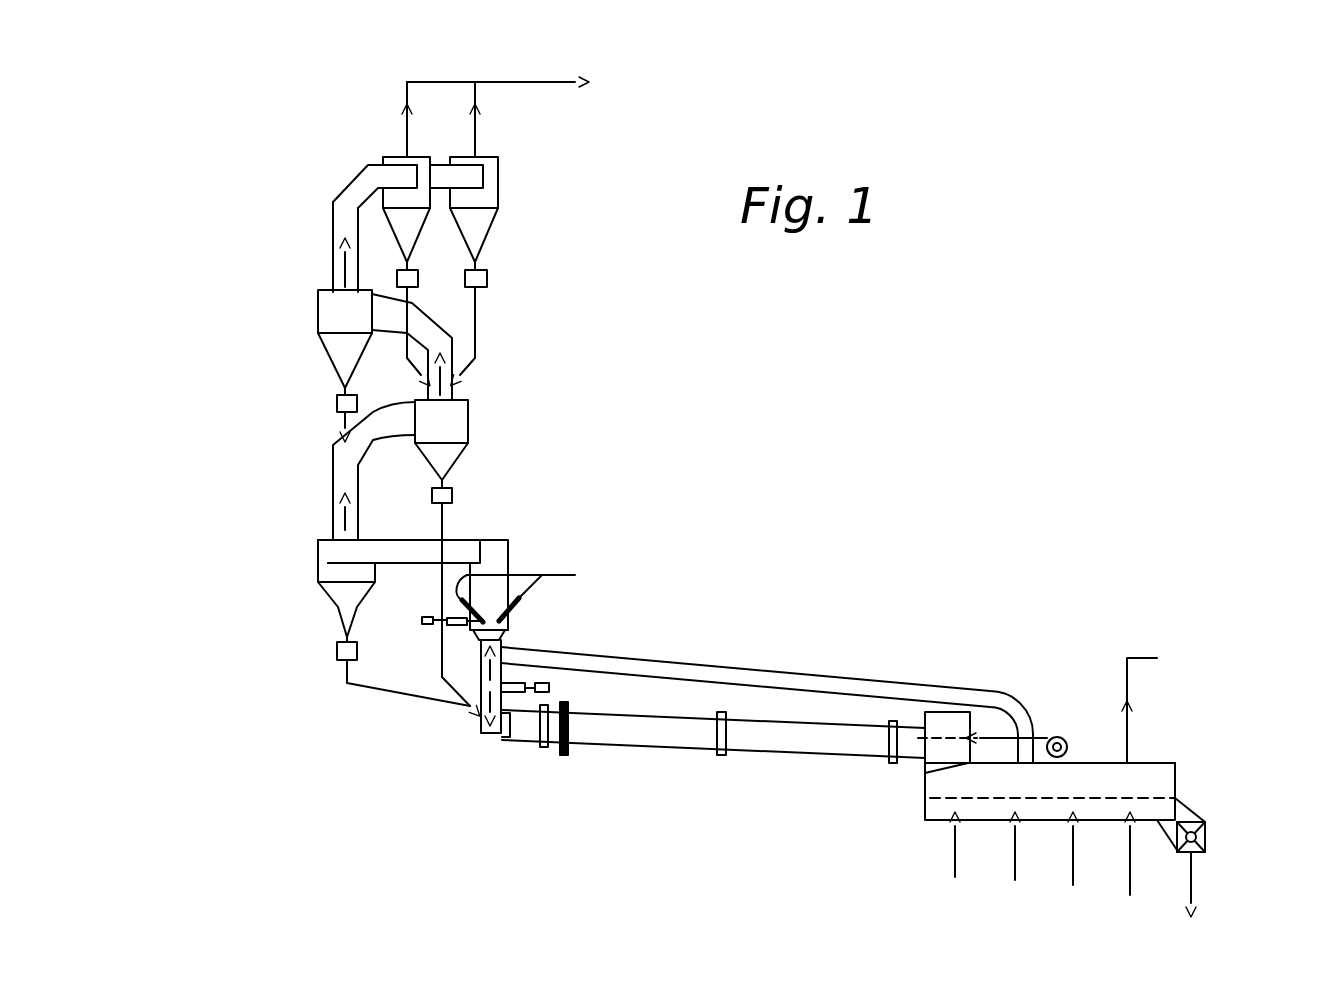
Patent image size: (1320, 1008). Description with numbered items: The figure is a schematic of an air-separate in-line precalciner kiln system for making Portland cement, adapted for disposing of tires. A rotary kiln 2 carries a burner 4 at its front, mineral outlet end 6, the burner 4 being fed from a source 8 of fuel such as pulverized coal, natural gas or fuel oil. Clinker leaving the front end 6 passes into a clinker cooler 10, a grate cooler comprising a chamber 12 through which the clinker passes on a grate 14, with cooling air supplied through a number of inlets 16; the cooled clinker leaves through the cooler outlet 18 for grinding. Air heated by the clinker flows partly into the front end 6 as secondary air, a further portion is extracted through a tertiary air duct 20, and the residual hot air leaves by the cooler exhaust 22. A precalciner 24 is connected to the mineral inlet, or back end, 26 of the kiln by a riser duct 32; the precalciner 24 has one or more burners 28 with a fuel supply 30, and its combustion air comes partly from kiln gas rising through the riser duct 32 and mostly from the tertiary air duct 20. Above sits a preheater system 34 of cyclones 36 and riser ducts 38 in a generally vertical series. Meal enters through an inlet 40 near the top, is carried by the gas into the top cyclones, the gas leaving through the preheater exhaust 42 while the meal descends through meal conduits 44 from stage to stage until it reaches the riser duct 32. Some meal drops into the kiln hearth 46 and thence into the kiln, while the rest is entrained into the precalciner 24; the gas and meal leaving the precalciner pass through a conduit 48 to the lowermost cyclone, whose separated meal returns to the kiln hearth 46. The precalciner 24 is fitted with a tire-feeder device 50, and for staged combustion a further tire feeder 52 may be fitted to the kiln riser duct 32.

The rotary kiln 2 is at (758, 764).
The burner 4 is at (947, 737).
The front end 6 is at (908, 727).
The source of fuel 8 is at (1053, 737).
The clinker cooler 10 is at (913, 802).
The chamber 12 is at (1147, 763).
The grate 14 is at (1148, 795).
The inlets 16 is at (1130, 887).
The cooler outlet 18 is at (1203, 827).
The tertiary air duct 20 is at (720, 665).
The cooler exhaust 22 is at (1157, 658).
The precalciner 24 is at (510, 546).
The mineral inlet 26 is at (503, 747).
The burners 28 is at (510, 633).
The supply of fuel 30 is at (560, 575).
The riser duct 32 is at (482, 730).
The preheater system 34 is at (580, 324).
The cyclones 36 is at (430, 232).
The riser ducts 38 is at (347, 182).
The inlet 40 is at (333, 230).
The preheater exhaust 42 is at (592, 78).
The meal conduits 44 is at (477, 330).
The kiln hearth 46 is at (488, 737).
The conduit 48 is at (397, 557).
The tire-feeder device 50 is at (420, 620).
The further tire feeder 52 is at (549, 688).